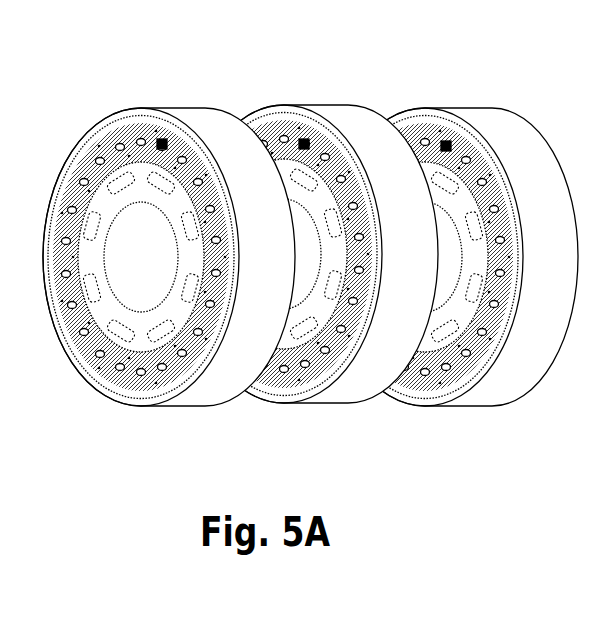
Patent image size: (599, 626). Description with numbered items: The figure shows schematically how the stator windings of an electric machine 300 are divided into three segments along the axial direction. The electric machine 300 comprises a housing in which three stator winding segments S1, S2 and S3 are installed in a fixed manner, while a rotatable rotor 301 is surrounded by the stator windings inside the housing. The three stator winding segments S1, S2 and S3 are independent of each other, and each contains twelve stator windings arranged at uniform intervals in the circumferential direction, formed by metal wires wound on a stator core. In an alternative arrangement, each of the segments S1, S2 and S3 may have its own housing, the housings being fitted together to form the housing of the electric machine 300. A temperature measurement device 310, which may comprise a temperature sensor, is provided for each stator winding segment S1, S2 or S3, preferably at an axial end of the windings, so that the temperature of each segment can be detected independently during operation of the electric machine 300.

The electric machine 300 is at (284, 37).
The rotor 301 is at (66, 346).
The temperature measurement device 310 is at (161, 139).
The stator winding segment S1 is at (156, 291).
The stator winding segment S2 is at (358, 383).
The stator winding segment S3 is at (520, 367).